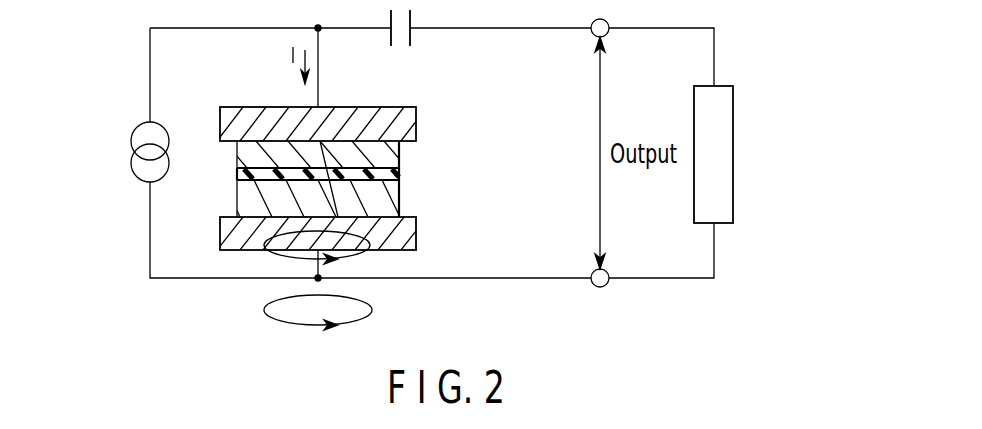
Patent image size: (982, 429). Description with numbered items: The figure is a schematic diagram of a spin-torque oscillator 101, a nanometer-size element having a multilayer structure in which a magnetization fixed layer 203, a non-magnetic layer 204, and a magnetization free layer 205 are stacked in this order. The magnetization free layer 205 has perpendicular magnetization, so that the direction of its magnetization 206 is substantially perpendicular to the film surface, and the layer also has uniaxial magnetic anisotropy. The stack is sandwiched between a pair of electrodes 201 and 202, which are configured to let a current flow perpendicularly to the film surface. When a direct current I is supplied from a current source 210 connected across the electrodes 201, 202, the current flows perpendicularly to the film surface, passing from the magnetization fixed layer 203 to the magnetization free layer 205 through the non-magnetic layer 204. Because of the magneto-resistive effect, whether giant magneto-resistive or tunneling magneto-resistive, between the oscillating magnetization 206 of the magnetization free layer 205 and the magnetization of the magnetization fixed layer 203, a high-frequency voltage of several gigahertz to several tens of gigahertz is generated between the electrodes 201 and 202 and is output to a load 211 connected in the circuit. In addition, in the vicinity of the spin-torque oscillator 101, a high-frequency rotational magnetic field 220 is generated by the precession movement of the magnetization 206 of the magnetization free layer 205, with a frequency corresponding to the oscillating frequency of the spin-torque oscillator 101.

The spin-torque oscillator 101 is at (355, 183).
The electrode 201 is at (413, 116).
The electrode 202 is at (413, 226).
The magnetization fixed layer 203 is at (401, 148).
The non-magnetic layer 204 is at (401, 172).
The magnetization free layer 205 is at (401, 200).
The magnetization 206 is at (337, 221).
The current source 210 is at (131, 169).
The load 211 is at (735, 103).
The high-frequency magnetic field 220 is at (265, 310).